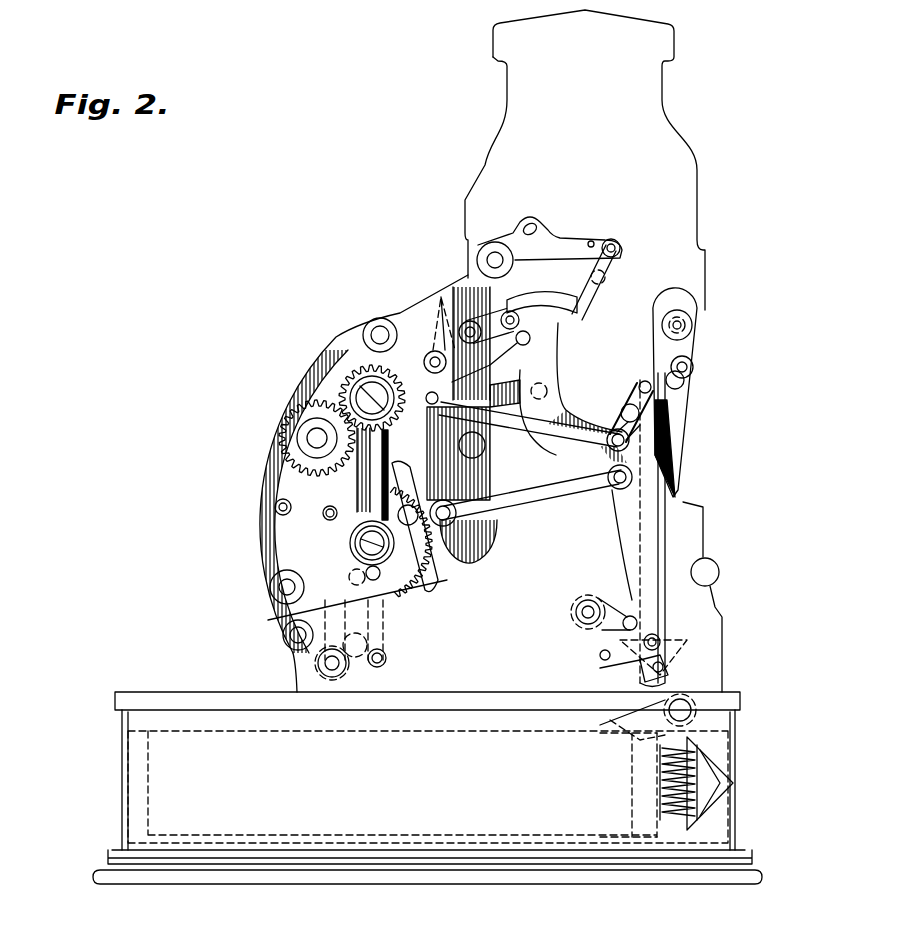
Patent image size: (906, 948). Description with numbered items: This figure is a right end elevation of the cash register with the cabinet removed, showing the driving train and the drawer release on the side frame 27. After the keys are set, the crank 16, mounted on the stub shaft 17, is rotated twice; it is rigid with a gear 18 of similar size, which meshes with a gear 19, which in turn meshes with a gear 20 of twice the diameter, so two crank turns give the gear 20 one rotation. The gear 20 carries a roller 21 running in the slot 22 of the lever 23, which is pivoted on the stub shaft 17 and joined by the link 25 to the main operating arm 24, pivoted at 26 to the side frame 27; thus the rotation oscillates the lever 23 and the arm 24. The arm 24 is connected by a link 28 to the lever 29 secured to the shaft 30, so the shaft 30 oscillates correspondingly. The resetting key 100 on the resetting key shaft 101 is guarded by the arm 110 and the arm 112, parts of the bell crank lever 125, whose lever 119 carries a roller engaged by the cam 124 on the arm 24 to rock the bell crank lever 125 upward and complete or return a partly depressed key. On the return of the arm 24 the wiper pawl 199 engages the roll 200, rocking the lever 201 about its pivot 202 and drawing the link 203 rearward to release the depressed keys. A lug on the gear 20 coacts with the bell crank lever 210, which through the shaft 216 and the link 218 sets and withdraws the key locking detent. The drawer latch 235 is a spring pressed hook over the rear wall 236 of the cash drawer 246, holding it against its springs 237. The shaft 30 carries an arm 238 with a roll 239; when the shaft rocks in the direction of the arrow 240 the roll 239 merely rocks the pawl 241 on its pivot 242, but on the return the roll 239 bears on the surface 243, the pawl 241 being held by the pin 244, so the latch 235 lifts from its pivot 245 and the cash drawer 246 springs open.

The crank 16 is at (395, 592).
The stub shaft 17 is at (340, 396).
The gear 18 is at (355, 365).
The gear 19 is at (290, 441).
The gear 20 is at (318, 500).
The roller 21 is at (480, 530).
The slot 22 is at (450, 555).
The lever 23 is at (440, 585).
The main operating arm 24 is at (640, 548).
The link 25 is at (532, 497).
The pivot pin 26 is at (547, 389).
The side frame 27 is at (677, 222).
The link 28 is at (677, 478).
The lever 29 is at (710, 586).
The shaft 30 is at (582, 614).
The resetting key 100 is at (420, 320).
The resetting key shaft 101 is at (486, 447).
The arm 110 is at (487, 283).
The arm 112 is at (441, 300).
The lever 119 is at (585, 310).
The cam 124 is at (540, 305).
The bell crank lever 125 is at (503, 240).
The wiper pawl 199 is at (697, 370).
The roll 200 is at (662, 327).
The lever 201 is at (632, 412).
The pivot 202 is at (657, 423).
The link 203 is at (540, 428).
The bell crank lever 210 is at (283, 562).
The shaft 216 is at (318, 663).
The link 218 is at (386, 656).
The drawer latch 235 is at (697, 700).
The rear wall 236 is at (643, 770).
The springs 237 is at (670, 820).
The arm 238 is at (620, 600).
The roll 239 is at (660, 640).
The arrow 240 is at (600, 655).
The pawl 241 is at (673, 657).
The pivot 242 is at (656, 668).
The surface 243 is at (600, 668).
The pin 244 is at (640, 705).
The pivot 245 is at (697, 720).
The cash drawer 246 is at (302, 836).